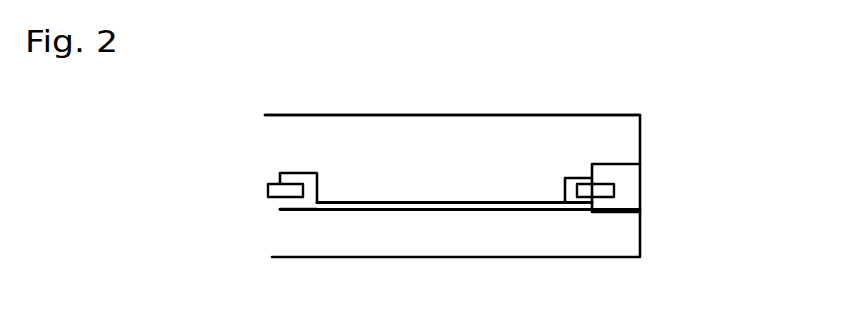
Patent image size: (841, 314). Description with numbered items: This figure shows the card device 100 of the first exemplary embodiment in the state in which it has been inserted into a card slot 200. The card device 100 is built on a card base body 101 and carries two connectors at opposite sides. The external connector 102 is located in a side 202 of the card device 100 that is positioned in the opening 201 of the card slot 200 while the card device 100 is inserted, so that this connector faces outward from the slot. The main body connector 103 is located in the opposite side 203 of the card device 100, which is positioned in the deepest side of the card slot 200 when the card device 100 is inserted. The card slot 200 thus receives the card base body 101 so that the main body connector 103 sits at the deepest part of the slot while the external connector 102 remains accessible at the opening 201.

The card device 100 is at (423, 181).
The card base body 101 is at (463, 202).
The external connector 102 is at (268, 186).
The main body connector 103 is at (615, 185).
The card slot 200 is at (450, 117).
The opening 201 is at (265, 115).
The side 202 is at (280, 208).
The side 203 is at (594, 203).